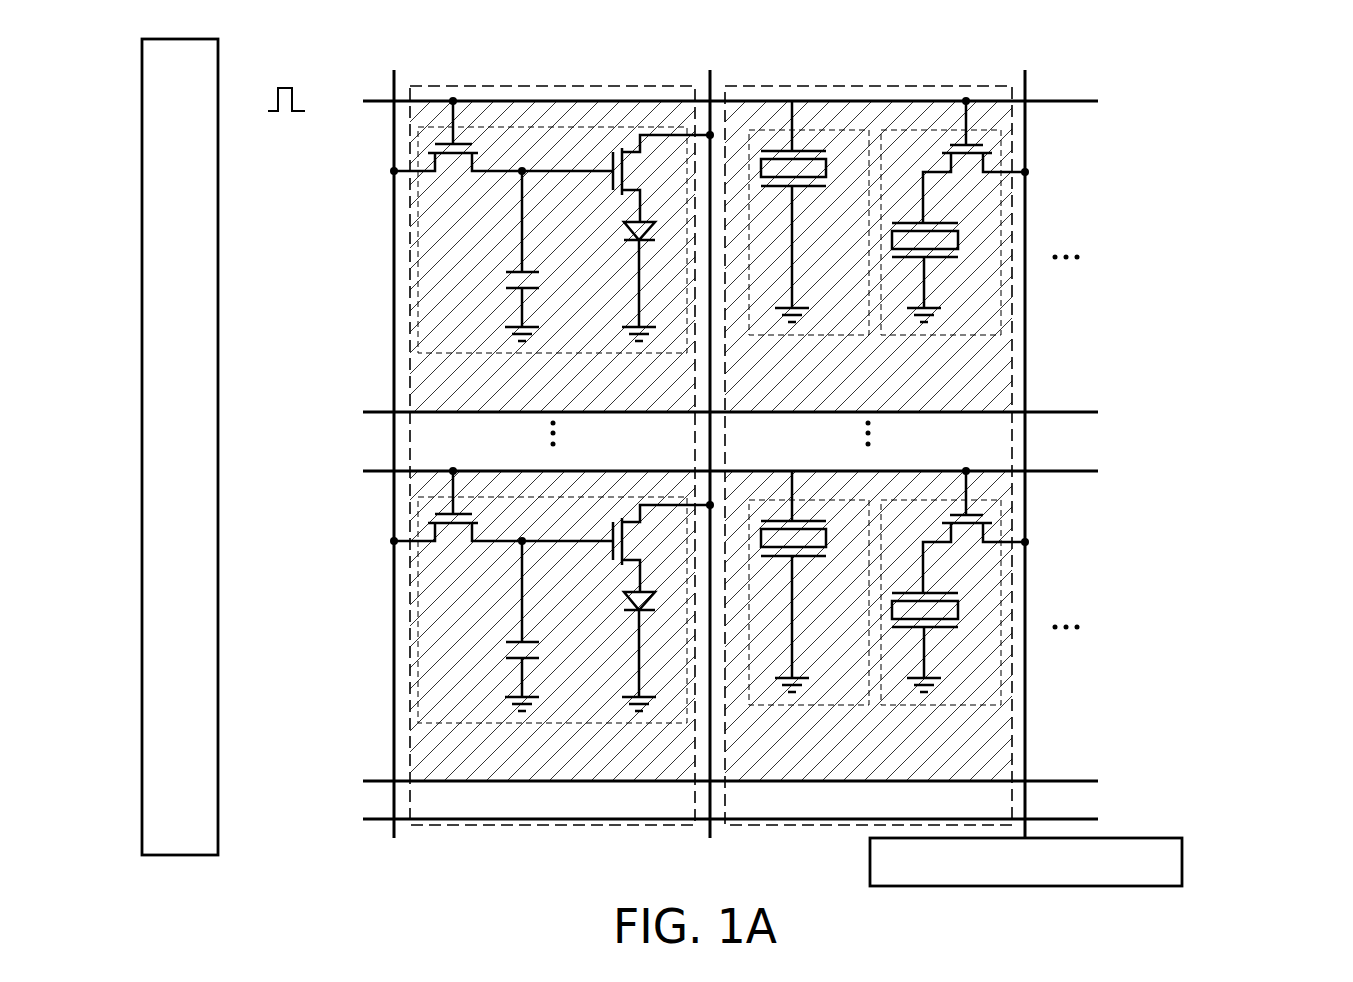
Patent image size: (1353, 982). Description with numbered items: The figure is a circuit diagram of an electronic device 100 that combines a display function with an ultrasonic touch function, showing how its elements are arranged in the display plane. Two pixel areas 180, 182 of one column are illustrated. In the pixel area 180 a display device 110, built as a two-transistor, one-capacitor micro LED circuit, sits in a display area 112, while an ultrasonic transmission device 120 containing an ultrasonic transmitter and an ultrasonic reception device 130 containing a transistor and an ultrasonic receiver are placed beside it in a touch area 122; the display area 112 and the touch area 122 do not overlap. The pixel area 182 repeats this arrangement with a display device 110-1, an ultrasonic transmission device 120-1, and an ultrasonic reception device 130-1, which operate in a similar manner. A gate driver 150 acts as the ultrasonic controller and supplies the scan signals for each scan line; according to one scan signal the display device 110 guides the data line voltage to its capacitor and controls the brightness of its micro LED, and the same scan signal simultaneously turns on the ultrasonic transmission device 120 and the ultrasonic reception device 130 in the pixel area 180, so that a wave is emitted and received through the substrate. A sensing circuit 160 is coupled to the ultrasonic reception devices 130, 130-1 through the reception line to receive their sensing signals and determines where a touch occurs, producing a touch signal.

The electronic device 100 is at (1340, 926).
The display device 110 is at (547, 355).
The display device 110-1 is at (547, 725).
The display area 112 is at (563, 827).
The ultrasonic transmission device 120 is at (773, 337).
The ultrasonic transmission device 120-1 is at (773, 707).
The touch area 122 is at (812, 827).
The ultrasonic reception device 130 is at (915, 337).
The ultrasonic reception device 130-1 is at (915, 707).
The gate driver 150 is at (142, 403).
The sensing circuit 160 is at (1183, 860).
The pixel area 180 is at (1027, 352).
The pixel area 182 is at (1027, 692).